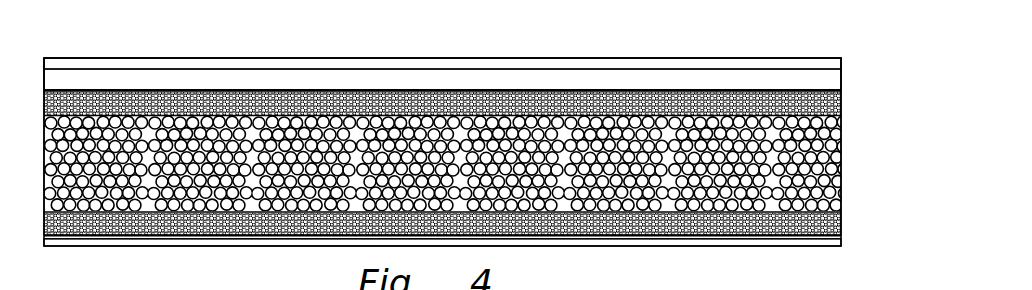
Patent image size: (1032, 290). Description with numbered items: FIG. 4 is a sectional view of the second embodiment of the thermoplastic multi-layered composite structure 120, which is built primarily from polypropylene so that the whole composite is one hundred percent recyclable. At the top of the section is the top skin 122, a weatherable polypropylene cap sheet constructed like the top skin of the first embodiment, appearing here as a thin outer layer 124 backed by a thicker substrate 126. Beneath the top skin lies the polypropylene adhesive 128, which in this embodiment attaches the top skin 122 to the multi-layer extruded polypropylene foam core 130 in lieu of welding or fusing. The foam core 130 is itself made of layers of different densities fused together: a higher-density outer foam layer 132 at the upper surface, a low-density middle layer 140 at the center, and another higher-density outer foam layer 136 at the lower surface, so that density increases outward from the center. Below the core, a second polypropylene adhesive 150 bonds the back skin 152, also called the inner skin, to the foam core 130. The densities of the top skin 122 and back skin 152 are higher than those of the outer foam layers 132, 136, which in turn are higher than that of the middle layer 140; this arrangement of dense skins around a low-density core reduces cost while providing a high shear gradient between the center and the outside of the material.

The composite structure 120 is at (513, 32).
The top skin 122 is at (855, 49).
The top sheet layer 124 is at (635, 57).
The second sheet layer 126 is at (692, 67).
The polypropylene adhesive 128 is at (833, 83).
The foam core 130 is at (853, 153).
The outer foam layer 132 is at (833, 93).
The middle layer 140 is at (833, 180).
The outer foam layer 136 is at (833, 218).
The polypropylene adhesive 150 is at (833, 227).
The back skin 152 is at (780, 235).